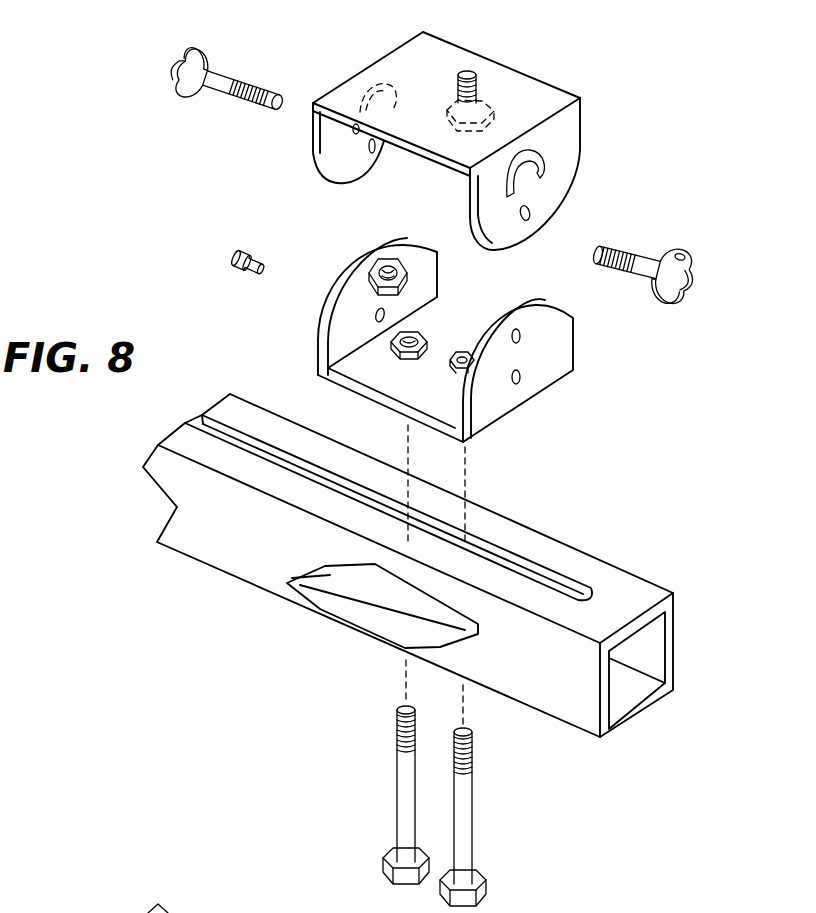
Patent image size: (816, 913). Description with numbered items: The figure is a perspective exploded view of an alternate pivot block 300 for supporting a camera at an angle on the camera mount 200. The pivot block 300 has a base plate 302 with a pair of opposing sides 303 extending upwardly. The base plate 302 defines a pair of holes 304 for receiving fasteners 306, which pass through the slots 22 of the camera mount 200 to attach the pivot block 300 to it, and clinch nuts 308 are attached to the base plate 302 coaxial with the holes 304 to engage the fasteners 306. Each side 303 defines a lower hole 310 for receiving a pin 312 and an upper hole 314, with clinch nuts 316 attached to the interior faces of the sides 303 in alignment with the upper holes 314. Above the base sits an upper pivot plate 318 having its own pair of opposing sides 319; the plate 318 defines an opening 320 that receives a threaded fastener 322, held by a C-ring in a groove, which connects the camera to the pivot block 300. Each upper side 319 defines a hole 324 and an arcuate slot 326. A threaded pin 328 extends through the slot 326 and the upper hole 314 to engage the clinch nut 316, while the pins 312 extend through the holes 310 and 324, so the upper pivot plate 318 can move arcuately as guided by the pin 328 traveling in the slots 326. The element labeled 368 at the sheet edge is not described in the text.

The pivot block 300 is at (668, 56).
The upper pivot plate 318 is at (450, 58).
The opposing sides 319 is at (578, 115).
The opening 320 is at (480, 78).
The threaded fastener 322 is at (494, 110).
The hole 324 is at (535, 215).
The arcuate slot 326 is at (578, 162).
The threaded pin 328 is at (265, 115).
The pin 312 is at (230, 262).
The base plate 302 is at (428, 396).
The opposing sides 303 is at (438, 258).
The holes 304 is at (318, 345).
The clinch nuts 308 is at (400, 343).
The lower hole 310 is at (523, 380).
The upper hole 314 is at (522, 336).
The clinch nuts 316 is at (372, 272).
The fasteners 306 is at (460, 826).
The slots 22 is at (516, 560).
The camera mount 200 is at (625, 598).
The component (cut off) 368 is at (178, 912).